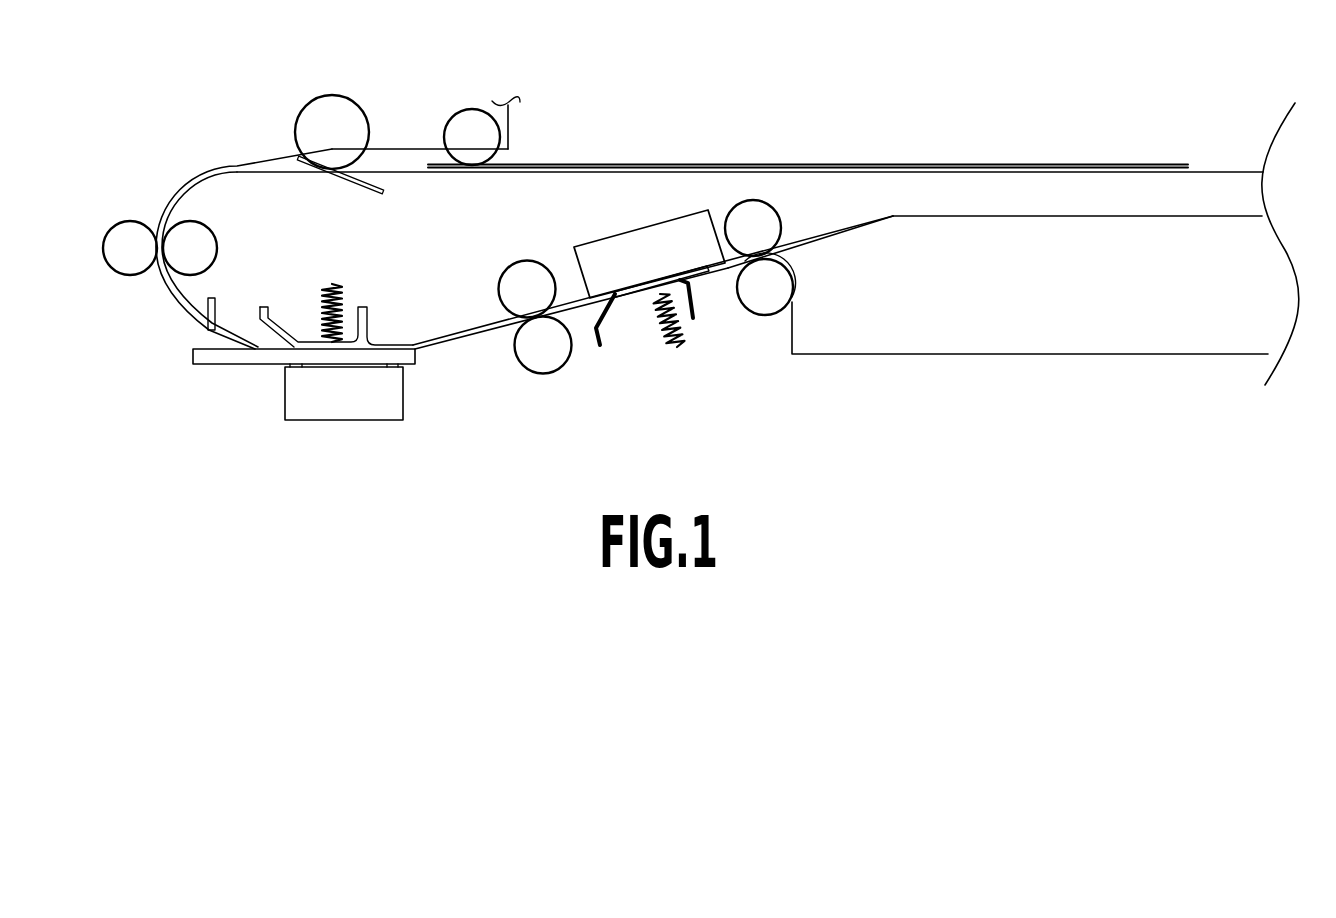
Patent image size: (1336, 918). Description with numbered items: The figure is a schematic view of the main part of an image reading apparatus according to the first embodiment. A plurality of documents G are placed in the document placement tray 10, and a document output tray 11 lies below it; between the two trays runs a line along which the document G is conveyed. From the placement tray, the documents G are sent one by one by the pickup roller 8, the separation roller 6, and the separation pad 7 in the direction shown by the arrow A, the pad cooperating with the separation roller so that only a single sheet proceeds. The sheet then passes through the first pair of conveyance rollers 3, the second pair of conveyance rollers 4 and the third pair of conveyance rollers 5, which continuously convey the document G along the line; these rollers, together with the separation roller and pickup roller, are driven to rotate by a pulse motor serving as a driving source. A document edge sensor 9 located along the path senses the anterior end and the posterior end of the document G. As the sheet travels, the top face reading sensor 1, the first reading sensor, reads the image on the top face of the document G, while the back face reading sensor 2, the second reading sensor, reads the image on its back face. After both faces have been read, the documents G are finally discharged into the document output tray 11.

The top face reading sensor 1 is at (344, 395).
The back face reading sensor 2 is at (641, 262).
The first pair of conveyance rollers 3 is at (130, 238).
The second pair of conveyance rollers 4 is at (548, 358).
The third pair of conveyance rollers 5 is at (763, 295).
The separation roller 6 is at (335, 125).
The separation pad 7 is at (369, 195).
The pickup roller 8 is at (469, 128).
The document edge sensor 9 is at (216, 300).
The document placement tray 10 is at (1207, 170).
The document output tray 11 is at (936, 352).
The document G is at (877, 163).
The arrow indicating conveyance direction A is at (152, 208).